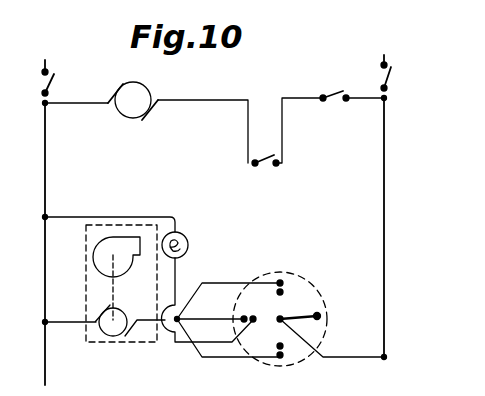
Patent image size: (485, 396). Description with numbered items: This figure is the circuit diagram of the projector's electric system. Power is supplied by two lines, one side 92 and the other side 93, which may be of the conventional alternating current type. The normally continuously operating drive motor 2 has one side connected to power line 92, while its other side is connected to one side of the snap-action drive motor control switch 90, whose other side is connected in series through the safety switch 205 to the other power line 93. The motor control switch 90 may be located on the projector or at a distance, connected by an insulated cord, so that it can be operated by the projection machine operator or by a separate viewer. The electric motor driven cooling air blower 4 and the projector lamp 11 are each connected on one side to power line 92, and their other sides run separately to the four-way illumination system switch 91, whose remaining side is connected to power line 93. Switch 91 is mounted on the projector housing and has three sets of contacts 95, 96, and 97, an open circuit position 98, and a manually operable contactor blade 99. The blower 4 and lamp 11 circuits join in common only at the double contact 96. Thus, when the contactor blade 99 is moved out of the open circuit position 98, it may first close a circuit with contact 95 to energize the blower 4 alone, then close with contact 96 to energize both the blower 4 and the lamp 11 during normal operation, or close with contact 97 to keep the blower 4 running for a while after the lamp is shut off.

The drive motor 2 is at (118, 116).
The cooling air blower 4 is at (88, 341).
The projector lamp 11 is at (189, 243).
The drive motor control switch 90 is at (262, 167).
The four-way illumination system switch 91 is at (305, 277).
The power line side 92 is at (46, 160).
The power line side 93 is at (384, 163).
The contact 95 is at (278, 275).
The double contact 96 is at (239, 315).
The contact 97 is at (277, 360).
The open circuit position 98 is at (324, 314).
The contactor blade 99 is at (311, 310).
The safety switch 205 is at (339, 102).